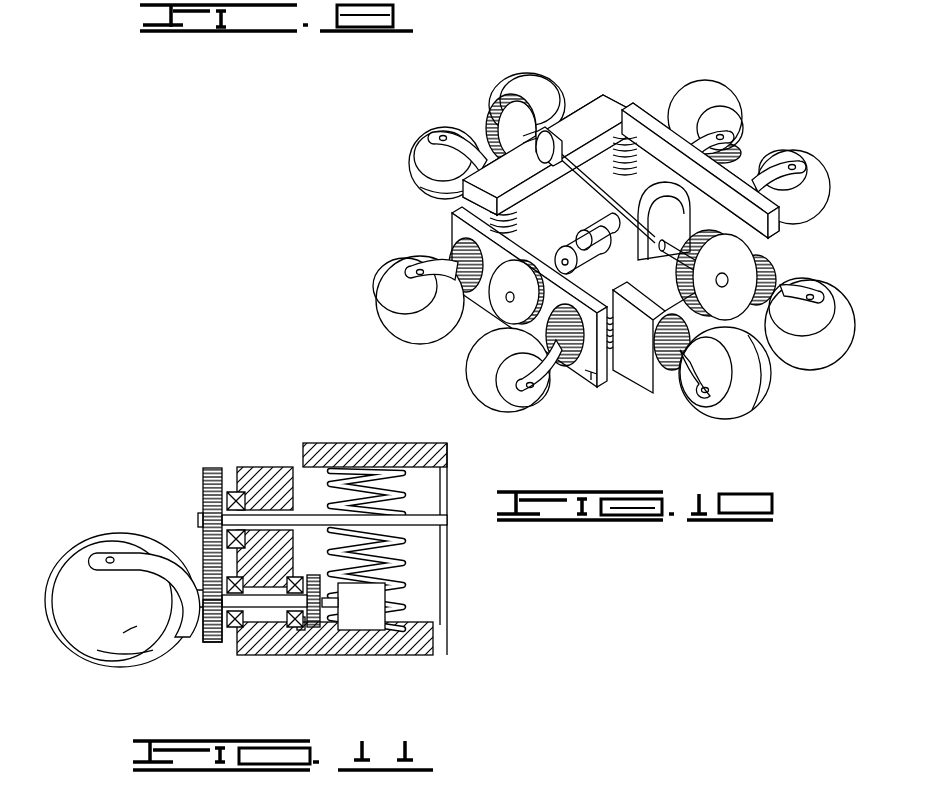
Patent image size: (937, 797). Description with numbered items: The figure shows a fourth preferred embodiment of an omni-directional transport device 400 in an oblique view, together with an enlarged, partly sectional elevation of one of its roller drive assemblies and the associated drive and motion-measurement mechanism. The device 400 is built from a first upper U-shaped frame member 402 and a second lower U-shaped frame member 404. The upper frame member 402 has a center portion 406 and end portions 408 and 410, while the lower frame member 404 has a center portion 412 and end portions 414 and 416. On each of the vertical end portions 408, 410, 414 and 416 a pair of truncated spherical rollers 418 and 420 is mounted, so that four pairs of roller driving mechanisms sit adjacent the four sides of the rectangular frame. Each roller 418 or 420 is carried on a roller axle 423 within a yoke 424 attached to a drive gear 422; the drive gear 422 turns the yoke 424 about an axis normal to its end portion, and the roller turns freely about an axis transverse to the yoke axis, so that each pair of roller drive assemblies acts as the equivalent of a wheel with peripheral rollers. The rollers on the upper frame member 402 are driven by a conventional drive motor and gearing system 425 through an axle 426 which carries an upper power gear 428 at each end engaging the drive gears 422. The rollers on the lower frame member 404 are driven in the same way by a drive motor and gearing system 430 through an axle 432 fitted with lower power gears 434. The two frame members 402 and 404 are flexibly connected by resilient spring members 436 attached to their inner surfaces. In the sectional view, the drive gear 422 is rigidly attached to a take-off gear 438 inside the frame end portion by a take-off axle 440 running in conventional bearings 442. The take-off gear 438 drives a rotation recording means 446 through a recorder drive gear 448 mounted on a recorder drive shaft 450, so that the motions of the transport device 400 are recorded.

In FIG. 10, the omni-directional transport device 400 is at (743, 76).
In FIG. 10, the first upper U-shaped frame member 402 is at (586, 99).
In FIG. 11, the first upper U-shaped frame member 402 is at (340, 444).
In FIG. 10, the second lower U-shaped frame member 404 is at (647, 99).
In FIG. 11, the second lower U-shaped frame member 404 is at (257, 468).
In FIG. 10, the center portion 406 is at (597, 108).
In FIG. 10, the end portion 408 is at (423, 183).
In FIG. 10, the end portion 410 is at (660, 382).
In FIG. 10, the center portion 412 is at (615, 383).
In FIG. 10, the end portion 414 is at (587, 372).
In FIG. 10, the end portion 416 is at (742, 177).
In FIG. 10, the truncated spherical roller 418 is at (530, 74).
In FIG. 10, the truncated spherical roller 420 is at (695, 82).
In FIG. 11, the truncated spherical roller 420 is at (82, 648).
In FIG. 10, the drive gear 422 is at (782, 267).
In FIG. 11, the drive gear 422 is at (213, 642).
In FIG. 10, the roller axle 423 is at (443, 135).
In FIG. 10, the yoke 424 is at (423, 152).
In FIG. 11, the yoke 424 is at (145, 552).
In FIG. 10, the drive motor and gearing system 425 is at (725, 220).
In FIG. 10, the axle 426 is at (560, 165).
In FIG. 11, the axle 426 is at (430, 517).
In FIG. 10, the upper power gear 428 is at (488, 127).
In FIG. 11, the upper power gear 428 is at (213, 468).
In FIG. 10, the drive motor and gearing system 430 is at (587, 240).
In FIG. 10, the axle 432 is at (557, 252).
In FIG. 10, the lower power gear 434 is at (497, 297).
In FIG. 10, the resilient spring member 436 is at (637, 162).
In FIG. 11, the resilient spring member 436 is at (405, 575).
In FIG. 11, the take-off gear 438 is at (320, 620).
In FIG. 11, the take-off axle 440 is at (268, 600).
In FIG. 11, the bearings 442 is at (300, 585).
In FIG. 11, the rotation recording means 446 is at (370, 608).
In FIG. 11, the recorder drive gear 448 is at (300, 620).
In FIG. 11, the recorder drive shaft 450 is at (340, 606).